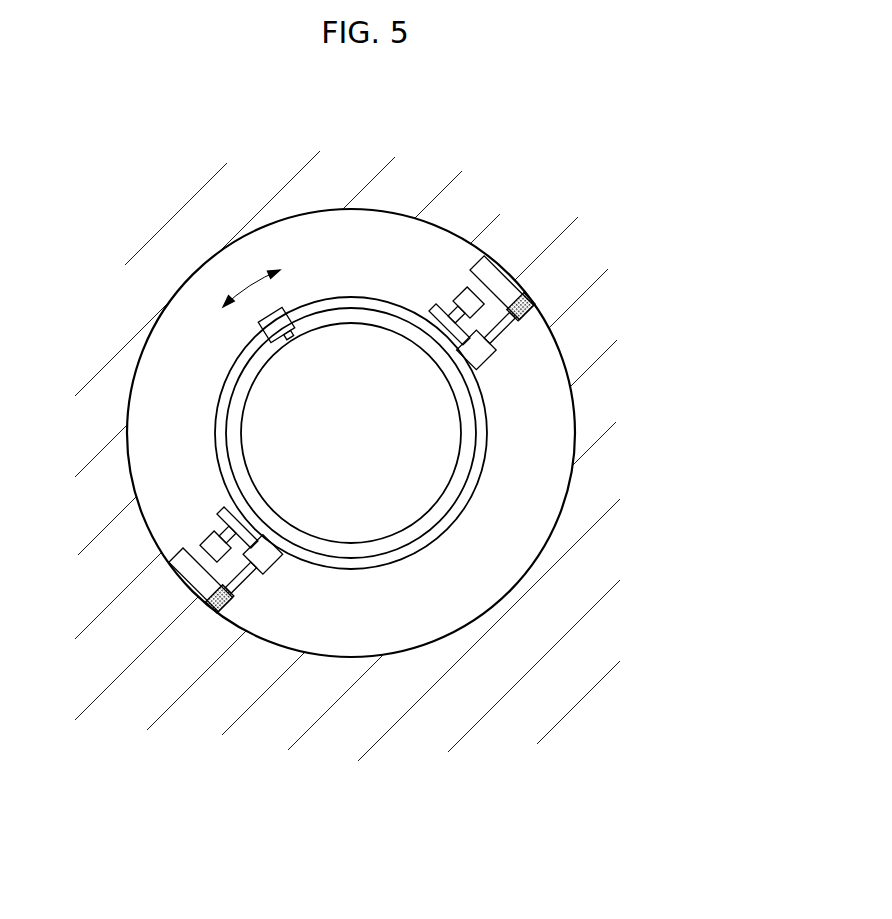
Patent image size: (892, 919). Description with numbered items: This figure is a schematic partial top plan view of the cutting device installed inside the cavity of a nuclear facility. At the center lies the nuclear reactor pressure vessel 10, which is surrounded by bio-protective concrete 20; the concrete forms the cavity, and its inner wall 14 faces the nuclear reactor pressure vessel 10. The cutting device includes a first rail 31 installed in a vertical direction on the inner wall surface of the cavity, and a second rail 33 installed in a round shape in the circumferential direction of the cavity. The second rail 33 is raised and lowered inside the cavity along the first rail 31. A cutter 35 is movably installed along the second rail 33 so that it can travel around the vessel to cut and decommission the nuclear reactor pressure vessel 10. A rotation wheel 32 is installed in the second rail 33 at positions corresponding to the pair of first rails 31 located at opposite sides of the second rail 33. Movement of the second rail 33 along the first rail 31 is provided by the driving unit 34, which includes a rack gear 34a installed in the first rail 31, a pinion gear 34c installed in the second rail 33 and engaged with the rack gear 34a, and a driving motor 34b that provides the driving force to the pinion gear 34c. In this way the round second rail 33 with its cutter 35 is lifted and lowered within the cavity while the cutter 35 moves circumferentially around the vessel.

The nuclear reactor pressure vessel 10 is at (415, 460).
The inner wall 14 is at (438, 637).
The bio-protective concrete 20 is at (447, 703).
The first rail 31 is at (505, 281).
The rotation wheel 32 is at (458, 292).
The second rail 33 is at (360, 570).
The driving unit 34 is at (453, 538).
The rack gear 34a is at (516, 299).
The driving motor 34b is at (481, 356).
The pinion gear 34c is at (514, 318).
The cutter 35 is at (260, 332).